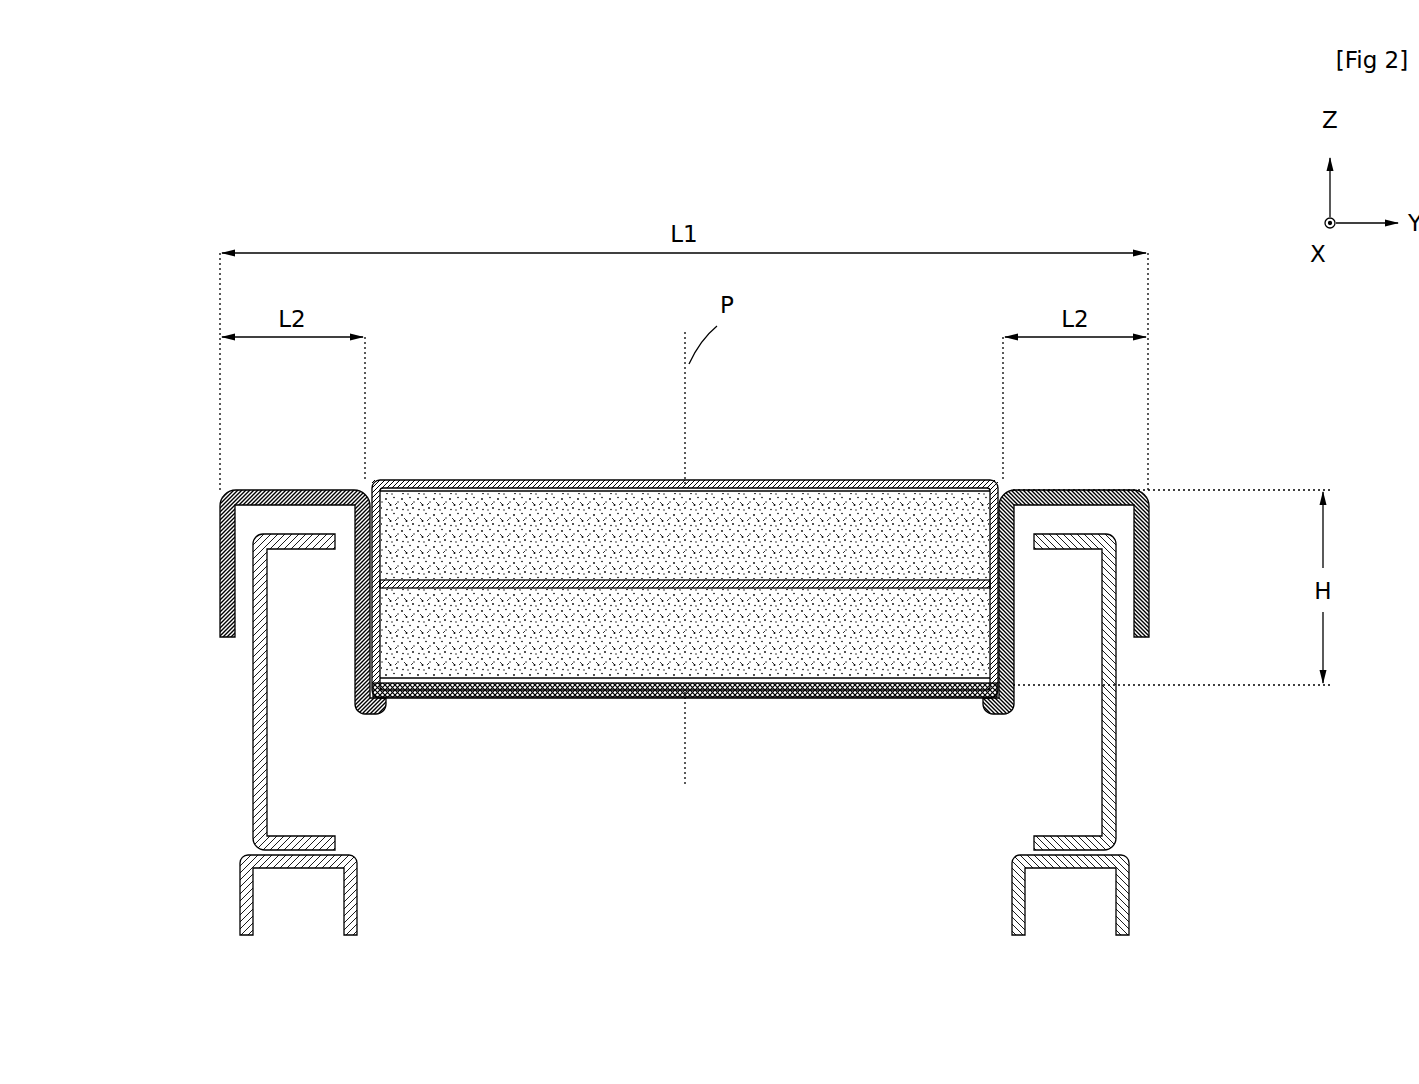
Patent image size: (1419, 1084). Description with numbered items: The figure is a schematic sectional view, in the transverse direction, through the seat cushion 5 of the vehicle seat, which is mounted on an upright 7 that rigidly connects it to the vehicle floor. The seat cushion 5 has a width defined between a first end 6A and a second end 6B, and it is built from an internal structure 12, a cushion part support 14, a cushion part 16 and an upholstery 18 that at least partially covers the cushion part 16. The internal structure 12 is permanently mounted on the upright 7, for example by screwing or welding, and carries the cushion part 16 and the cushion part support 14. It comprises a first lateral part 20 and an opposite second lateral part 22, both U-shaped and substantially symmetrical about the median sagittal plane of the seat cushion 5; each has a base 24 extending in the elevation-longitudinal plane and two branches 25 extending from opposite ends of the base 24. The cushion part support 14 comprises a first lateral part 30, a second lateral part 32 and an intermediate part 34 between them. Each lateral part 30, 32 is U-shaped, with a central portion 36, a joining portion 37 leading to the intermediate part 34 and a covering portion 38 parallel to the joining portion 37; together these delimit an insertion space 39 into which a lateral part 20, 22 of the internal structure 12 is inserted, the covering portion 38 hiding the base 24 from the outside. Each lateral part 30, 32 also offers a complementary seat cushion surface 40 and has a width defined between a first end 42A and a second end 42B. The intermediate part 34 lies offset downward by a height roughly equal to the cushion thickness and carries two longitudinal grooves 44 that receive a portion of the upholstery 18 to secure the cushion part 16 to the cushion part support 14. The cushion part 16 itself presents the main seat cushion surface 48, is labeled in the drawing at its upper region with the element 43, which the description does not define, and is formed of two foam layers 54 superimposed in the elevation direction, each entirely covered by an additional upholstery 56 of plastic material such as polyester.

The seat cushion 5 is at (190, 468).
The upright 7 is at (239, 908).
The internal structure 12 is at (272, 758).
The cushion part support 14 is at (640, 702).
The cushion part 16 is at (685, 582).
The upholstery 18 is at (853, 482).
The first lateral part 20 is at (252, 745).
The second lateral part 22 is at (1116, 765).
The base 24 is at (252, 703).
The branches 25 is at (300, 550).
The first lateral part 30 is at (217, 555).
The second lateral part 32 is at (1150, 545).
The intermediate part 34 is at (731, 702).
The central portion 36 is at (300, 490).
The joining portion 37 is at (353, 650).
The covering portion 38 is at (218, 620).
The insertion space 39 is at (323, 525).
The complementary seat cushion surface 40 is at (262, 492).
The first end 42A is at (220, 535).
The second end 42B is at (418, 480).
The upper face 43 is at (509, 476).
The grooves 44 is at (375, 712).
The main seat cushion surface 48 is at (665, 480).
The foam layers 54 is at (753, 482).
The additional upholstery 56 is at (922, 482).
The first end 6A is at (218, 595).
The second end 6B is at (1150, 572).